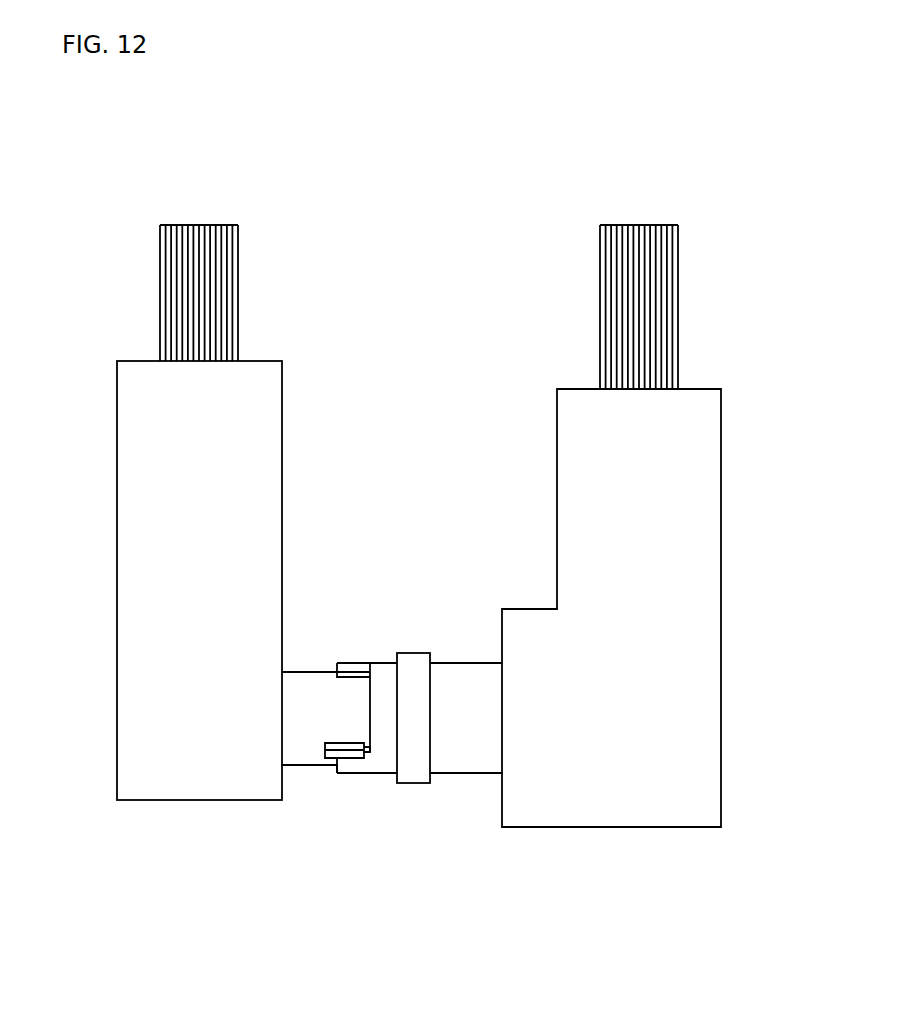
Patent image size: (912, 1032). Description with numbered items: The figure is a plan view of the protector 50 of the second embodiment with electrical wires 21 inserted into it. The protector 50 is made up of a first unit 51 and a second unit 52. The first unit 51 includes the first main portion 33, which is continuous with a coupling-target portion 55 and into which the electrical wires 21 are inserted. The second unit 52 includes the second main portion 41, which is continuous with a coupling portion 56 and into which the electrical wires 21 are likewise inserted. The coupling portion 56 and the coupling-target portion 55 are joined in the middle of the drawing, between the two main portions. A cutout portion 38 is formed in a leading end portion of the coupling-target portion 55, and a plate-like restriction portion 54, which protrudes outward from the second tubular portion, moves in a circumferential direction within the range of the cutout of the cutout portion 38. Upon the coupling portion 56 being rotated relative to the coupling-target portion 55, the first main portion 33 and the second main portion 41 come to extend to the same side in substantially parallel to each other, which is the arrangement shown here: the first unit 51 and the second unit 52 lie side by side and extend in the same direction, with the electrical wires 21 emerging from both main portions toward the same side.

The electrical wires 21 is at (216, 232).
The first main portion 33 is at (705, 684).
The cutout portion 38 is at (369, 705).
The second main portion 41 is at (155, 737).
The protector 50 is at (466, 899).
The first unit 51 is at (682, 840).
The second unit 52 is at (126, 844).
The restriction portion 54 is at (353, 758).
The coupling-target portion 55 is at (477, 758).
The coupling portion 56 is at (307, 755).